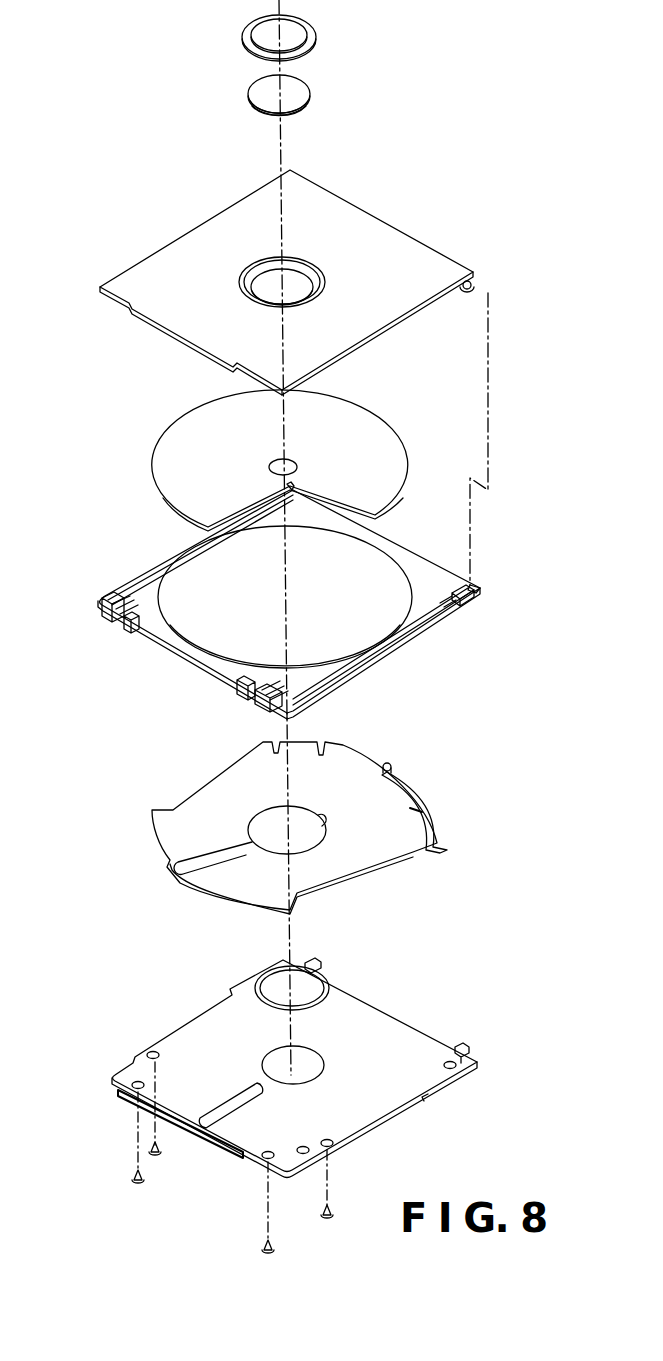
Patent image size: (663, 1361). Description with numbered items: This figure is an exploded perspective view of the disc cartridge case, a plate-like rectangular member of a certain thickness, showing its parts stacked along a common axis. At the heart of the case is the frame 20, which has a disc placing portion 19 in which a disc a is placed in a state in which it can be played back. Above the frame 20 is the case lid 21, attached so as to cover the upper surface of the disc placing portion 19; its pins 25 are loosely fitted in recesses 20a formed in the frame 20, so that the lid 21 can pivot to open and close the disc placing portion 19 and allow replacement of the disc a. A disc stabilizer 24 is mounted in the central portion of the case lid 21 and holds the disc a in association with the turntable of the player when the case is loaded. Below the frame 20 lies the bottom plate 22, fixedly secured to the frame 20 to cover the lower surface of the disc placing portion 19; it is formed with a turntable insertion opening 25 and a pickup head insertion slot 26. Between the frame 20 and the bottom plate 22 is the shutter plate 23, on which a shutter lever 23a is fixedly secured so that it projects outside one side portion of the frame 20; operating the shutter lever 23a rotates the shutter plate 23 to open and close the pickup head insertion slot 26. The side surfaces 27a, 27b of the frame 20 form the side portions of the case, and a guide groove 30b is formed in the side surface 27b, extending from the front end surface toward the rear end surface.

The disc stabilizer 24 is at (297, 87).
The case lid 21 is at (400, 250).
The pins / turntable insertion opening 25 is at (475, 273).
The recesses 20a is at (290, 486).
The disc a is at (405, 438).
The frame 20 is at (311, 604).
The disc placing portion 19 is at (332, 538).
The side surface 27a is at (155, 553).
The side surface 27b is at (353, 663).
The guide groove 30b is at (372, 647).
The shutter plate 23 is at (336, 822).
The shutter lever 23a is at (437, 838).
The bottom plate 22 is at (294, 1105).
The pickup head insertion slot 26 is at (228, 1093).